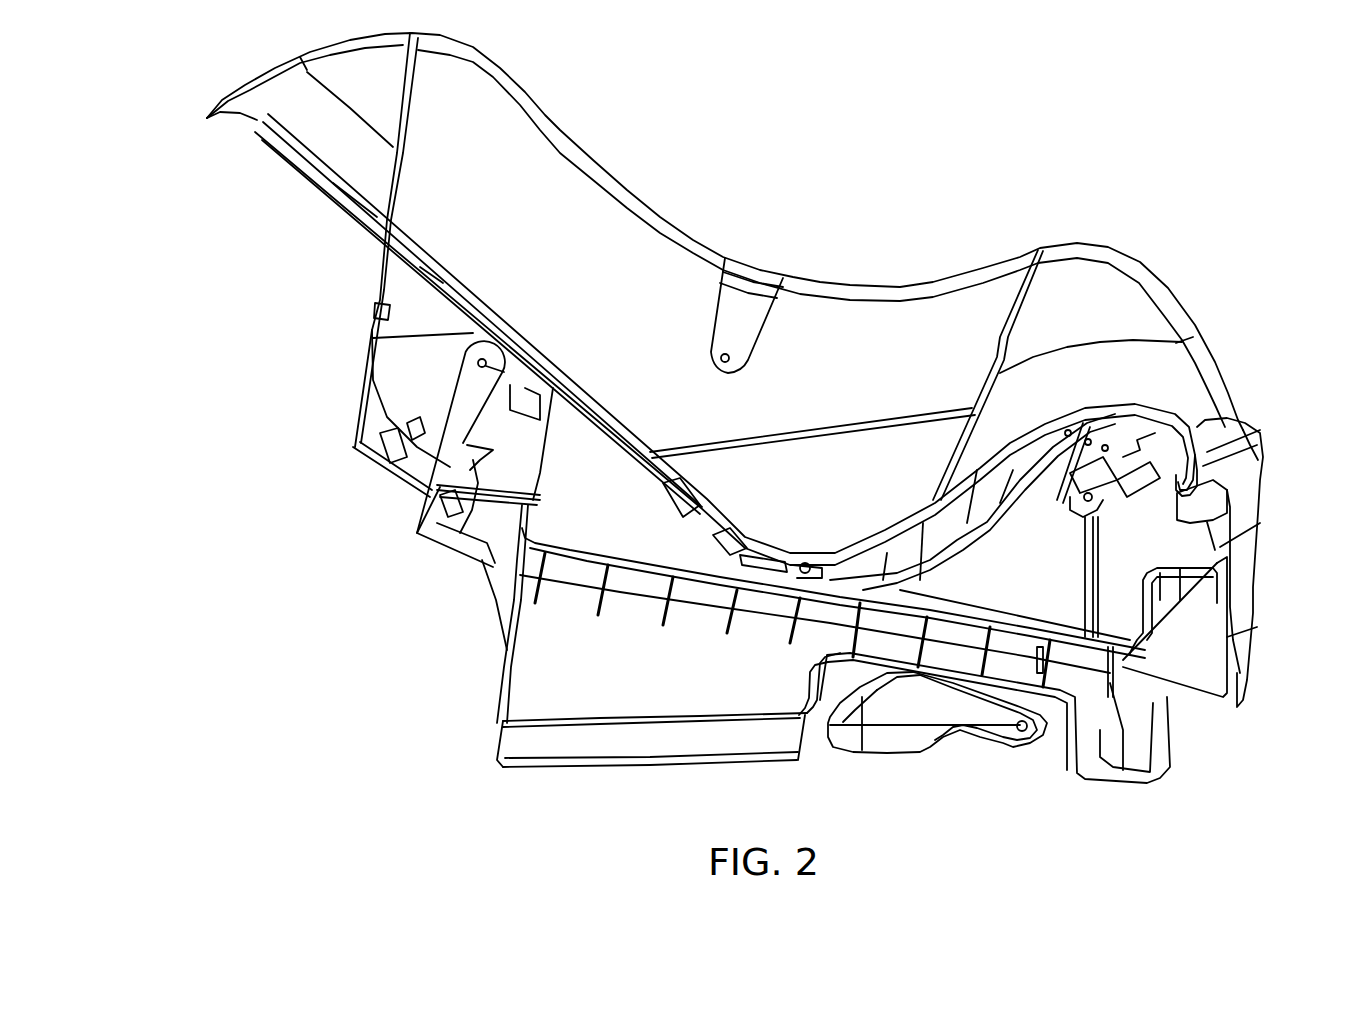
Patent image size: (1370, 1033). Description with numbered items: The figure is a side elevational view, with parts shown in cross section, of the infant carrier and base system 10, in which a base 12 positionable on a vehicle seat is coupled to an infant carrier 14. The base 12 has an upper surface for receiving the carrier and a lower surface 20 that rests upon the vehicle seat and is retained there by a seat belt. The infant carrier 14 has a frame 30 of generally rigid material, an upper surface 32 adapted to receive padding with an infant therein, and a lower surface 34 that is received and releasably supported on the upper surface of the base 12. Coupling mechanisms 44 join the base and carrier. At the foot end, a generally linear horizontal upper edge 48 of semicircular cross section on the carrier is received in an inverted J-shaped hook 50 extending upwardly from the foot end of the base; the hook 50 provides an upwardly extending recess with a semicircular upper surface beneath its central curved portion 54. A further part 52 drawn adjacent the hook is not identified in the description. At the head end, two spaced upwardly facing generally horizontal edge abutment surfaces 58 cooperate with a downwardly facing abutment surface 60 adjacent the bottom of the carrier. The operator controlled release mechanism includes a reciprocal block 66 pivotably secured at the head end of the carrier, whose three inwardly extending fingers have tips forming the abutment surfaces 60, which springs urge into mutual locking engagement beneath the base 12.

The infant carrier and base system 10 is at (221, 670).
The base 12 is at (819, 644).
The infant carrier 14 is at (725, 231).
The lower surface 20 is at (668, 737).
The frame 30 is at (768, 266).
The upper surface 32 is at (725, 346).
The lower surface 34 is at (481, 327).
The coupling mechanisms 44 is at (996, 494).
The upper edge 48 is at (820, 588).
The inverted J-shaped hook 50 is at (1269, 547).
The hook 52 is at (1243, 474).
The central curved portion 54 is at (1264, 406).
The edge abutment surfaces 58 is at (512, 495).
The downwardly facing abutment surface 60 is at (523, 489).
The reciprocal block 66 is at (430, 431).